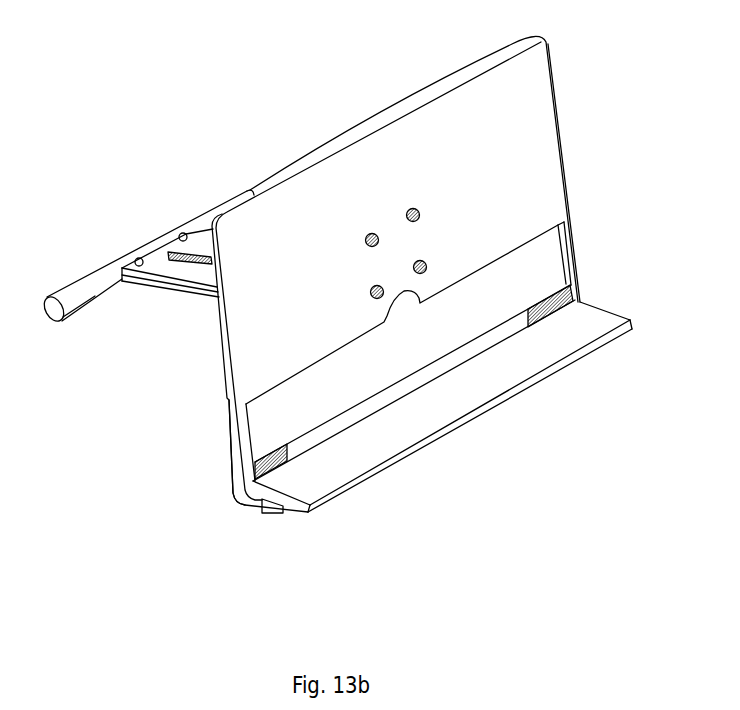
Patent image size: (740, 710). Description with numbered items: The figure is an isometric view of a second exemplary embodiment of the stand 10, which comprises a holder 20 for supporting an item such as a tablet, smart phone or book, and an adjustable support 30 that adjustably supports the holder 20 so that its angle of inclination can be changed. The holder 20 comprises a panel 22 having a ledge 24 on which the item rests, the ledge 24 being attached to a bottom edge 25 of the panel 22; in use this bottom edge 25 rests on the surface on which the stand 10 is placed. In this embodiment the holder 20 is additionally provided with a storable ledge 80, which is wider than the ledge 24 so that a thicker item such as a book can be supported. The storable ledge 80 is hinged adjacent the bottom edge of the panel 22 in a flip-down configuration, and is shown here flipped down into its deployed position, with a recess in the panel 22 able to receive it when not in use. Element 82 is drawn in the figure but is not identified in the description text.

The stand 10 is at (120, 227).
The holder 20 is at (420, 274).
The panel 22 is at (552, 192).
The ledge 24 is at (266, 512).
The bottom edge 25 is at (237, 500).
The adjustable support 30 is at (178, 294).
The storable ledge 80 is at (583, 335).
The retaining strip 82 is at (548, 265).